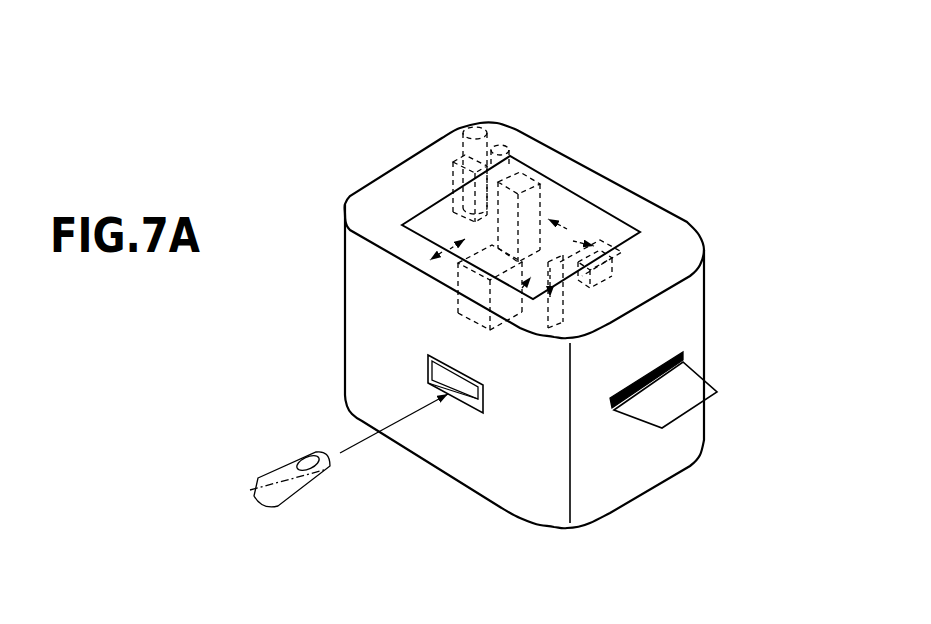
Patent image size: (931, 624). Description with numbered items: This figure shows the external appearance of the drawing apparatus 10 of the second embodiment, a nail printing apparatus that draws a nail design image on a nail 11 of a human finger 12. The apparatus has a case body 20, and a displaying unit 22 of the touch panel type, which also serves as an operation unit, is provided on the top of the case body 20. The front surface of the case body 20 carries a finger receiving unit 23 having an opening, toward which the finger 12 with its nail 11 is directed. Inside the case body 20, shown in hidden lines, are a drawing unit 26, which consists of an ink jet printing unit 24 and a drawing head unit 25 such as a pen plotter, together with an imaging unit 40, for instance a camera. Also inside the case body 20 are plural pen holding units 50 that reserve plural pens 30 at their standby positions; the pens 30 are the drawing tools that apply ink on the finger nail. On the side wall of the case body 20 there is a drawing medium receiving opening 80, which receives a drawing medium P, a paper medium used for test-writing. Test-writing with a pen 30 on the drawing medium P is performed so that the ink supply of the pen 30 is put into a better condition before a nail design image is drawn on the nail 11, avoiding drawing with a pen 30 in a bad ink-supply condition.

The drawing apparatus 10 is at (337, 98).
The nail 11 is at (308, 460).
The finger 12 is at (278, 470).
The case body 20 is at (706, 308).
The displaying unit 22 is at (570, 204).
The finger receiving unit 23 is at (430, 381).
The ink jet printing unit 24 is at (448, 302).
The drawing head unit 25 is at (472, 333).
The drawing unit 26 is at (275, 270).
The pen 30 is at (492, 128).
The imaging unit 40 is at (630, 260).
The pen holding unit 50 is at (465, 236).
The drawing medium receiving opening 80 is at (683, 362).
The drawing medium P is at (673, 393).